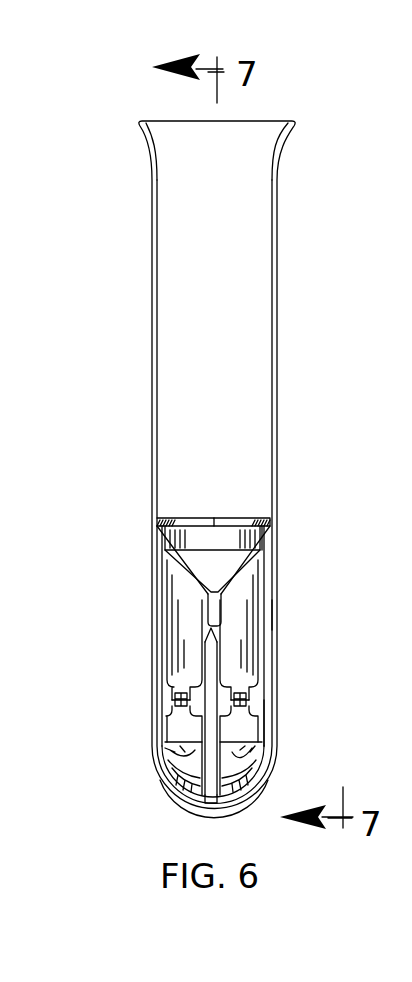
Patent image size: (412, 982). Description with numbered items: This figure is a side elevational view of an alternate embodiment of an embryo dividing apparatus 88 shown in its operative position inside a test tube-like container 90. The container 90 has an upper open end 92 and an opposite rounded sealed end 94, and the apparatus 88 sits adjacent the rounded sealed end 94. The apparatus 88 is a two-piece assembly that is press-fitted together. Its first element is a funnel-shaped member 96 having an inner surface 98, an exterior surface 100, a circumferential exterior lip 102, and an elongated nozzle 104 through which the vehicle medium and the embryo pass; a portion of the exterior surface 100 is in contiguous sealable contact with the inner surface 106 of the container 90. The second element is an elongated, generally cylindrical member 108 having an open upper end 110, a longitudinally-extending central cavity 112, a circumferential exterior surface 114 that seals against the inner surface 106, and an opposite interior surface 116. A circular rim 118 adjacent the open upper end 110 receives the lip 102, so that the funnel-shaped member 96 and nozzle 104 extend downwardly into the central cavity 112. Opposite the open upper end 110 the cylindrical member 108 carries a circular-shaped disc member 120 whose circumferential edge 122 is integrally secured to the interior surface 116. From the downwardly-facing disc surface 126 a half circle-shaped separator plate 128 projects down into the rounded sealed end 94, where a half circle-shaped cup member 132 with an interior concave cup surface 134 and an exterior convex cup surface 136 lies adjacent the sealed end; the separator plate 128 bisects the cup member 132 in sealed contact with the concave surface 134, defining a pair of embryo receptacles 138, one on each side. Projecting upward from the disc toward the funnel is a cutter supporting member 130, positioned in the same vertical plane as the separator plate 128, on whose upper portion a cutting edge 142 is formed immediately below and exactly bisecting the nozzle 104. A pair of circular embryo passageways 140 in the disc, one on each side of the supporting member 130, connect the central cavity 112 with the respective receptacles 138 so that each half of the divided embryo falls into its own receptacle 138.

The apparatus 88 is at (242, 636).
The test tube-like container 90 is at (277, 269).
The upper open end 92 is at (238, 121).
The rounded sealed end 94 is at (199, 821).
The funnel-shaped member 96 is at (154, 522).
The inner surface 98 is at (217, 536).
The exterior surface 100 is at (272, 533).
The circumferential exterior lip 102 is at (155, 544).
The elongated nozzle 104 is at (160, 614).
The inner surface 106 is at (157, 374).
The cylindrical member 108 is at (266, 578).
The open upper end 110 is at (270, 537).
The central cavity 112 is at (180, 655).
The circumferential exterior surface 114 is at (273, 614).
The interior surface 116 is at (253, 603).
The circular rim 118 is at (269, 521).
The circular-shaped disc member 120 is at (163, 700).
The circumferential edge 122 is at (259, 672).
The downwardly-facing disc surface 126 is at (266, 732).
The separator plate 128 is at (160, 789).
The cutter supporting member 130 is at (222, 648).
The cup member 132 is at (262, 786).
The interior concave cup surface 134 is at (162, 764).
The exterior convex cup surface 136 is at (213, 805).
The embryo receptacles 138 is at (167, 748).
The circular embryo passageways 140 is at (178, 708).
The cutting edge 142 is at (205, 628).